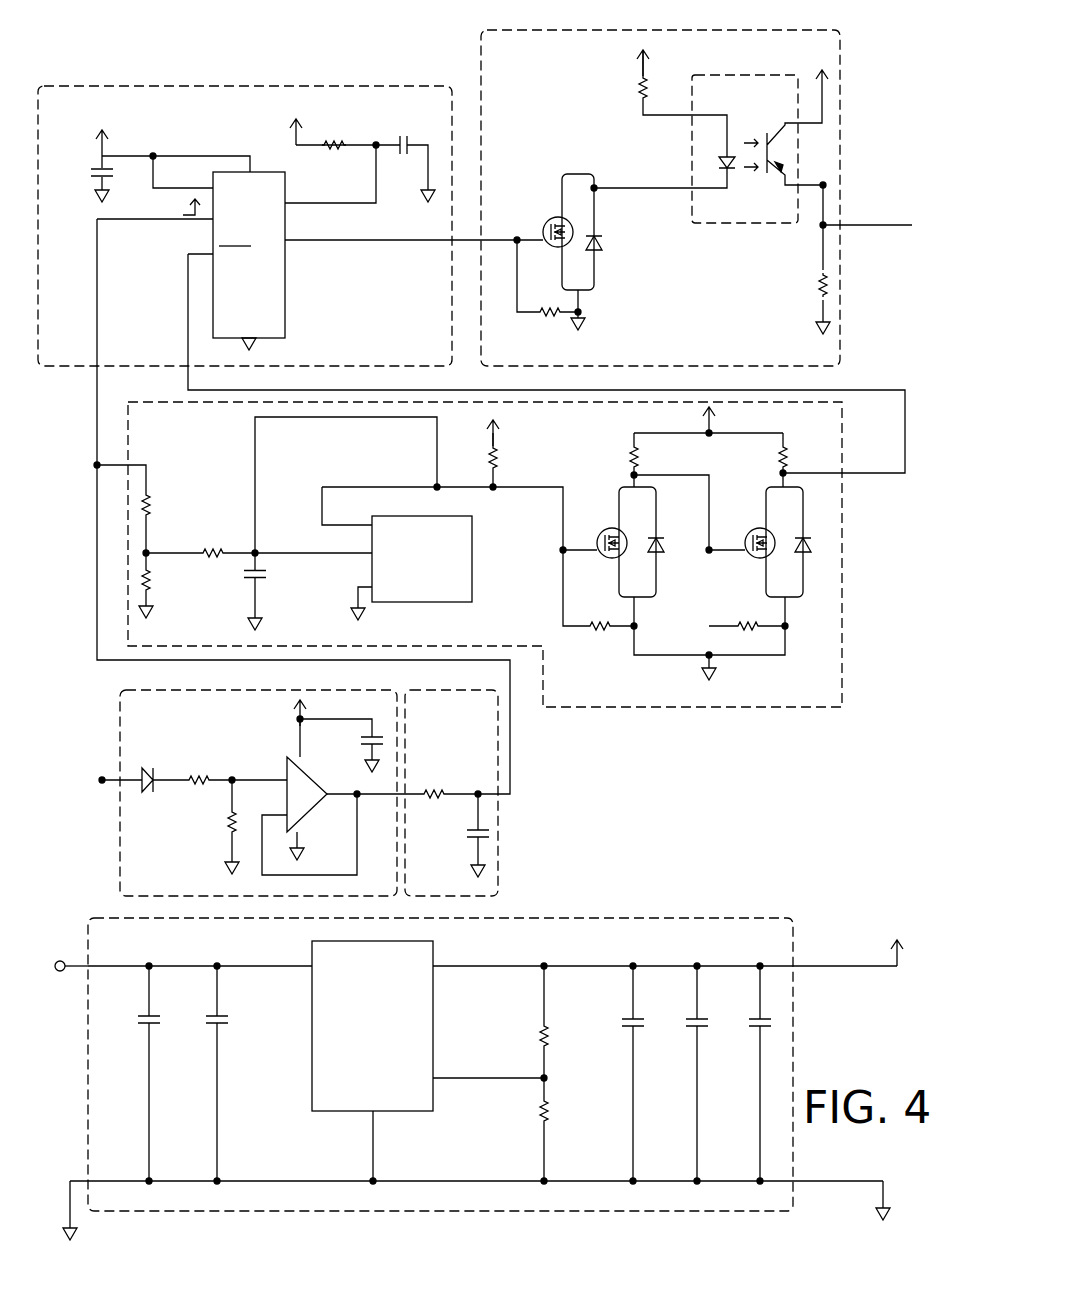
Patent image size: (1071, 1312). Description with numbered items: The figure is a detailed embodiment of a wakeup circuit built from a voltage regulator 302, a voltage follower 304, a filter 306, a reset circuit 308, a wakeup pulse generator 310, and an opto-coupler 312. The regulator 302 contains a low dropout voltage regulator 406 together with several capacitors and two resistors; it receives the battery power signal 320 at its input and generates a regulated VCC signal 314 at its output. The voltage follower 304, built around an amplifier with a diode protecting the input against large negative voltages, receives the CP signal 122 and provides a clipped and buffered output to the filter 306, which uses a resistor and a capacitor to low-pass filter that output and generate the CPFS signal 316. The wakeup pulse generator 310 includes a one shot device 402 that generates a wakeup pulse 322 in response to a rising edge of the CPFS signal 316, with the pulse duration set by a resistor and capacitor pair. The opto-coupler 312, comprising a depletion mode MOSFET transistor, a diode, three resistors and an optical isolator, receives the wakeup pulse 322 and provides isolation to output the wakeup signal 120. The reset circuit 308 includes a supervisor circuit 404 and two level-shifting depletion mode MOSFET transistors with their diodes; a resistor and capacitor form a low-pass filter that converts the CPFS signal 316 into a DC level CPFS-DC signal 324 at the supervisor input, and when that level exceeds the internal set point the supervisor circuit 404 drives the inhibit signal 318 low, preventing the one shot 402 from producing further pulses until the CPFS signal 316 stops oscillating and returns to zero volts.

The wakeup pulse generator 310 is at (160, 84).
The opto-coupler 312 is at (481, 70).
The wakeup pulse 322 is at (362, 243).
The wakeup signal 120 is at (886, 222).
The inhibit signal 318 is at (890, 478).
The reset circuit 308 is at (790, 708).
The supervisor circuit 404 is at (472, 558).
The CPFS-DC signal 324 is at (290, 553).
The voltage follower 304 is at (118, 720).
The CP signal 122 is at (107, 782).
The filter 306 is at (500, 851).
The CPFS signal 316 is at (512, 770).
The voltage regulator 302 is at (793, 916).
The battery power signal 320 is at (76, 963).
The VCC signal 314 is at (885, 968).
The one shot device 402 is at (260, 324).
The low dropout voltage regulator 406 is at (389, 1047).